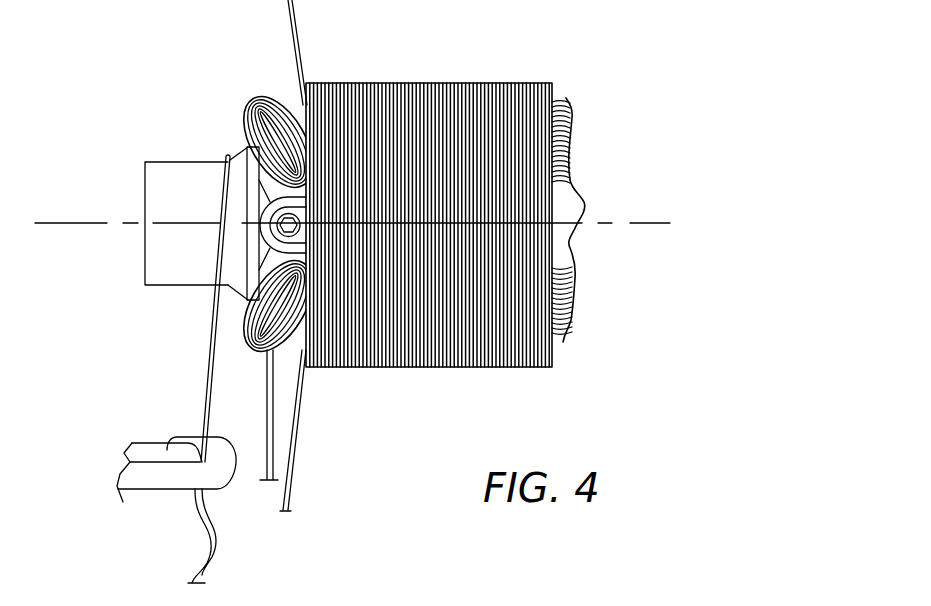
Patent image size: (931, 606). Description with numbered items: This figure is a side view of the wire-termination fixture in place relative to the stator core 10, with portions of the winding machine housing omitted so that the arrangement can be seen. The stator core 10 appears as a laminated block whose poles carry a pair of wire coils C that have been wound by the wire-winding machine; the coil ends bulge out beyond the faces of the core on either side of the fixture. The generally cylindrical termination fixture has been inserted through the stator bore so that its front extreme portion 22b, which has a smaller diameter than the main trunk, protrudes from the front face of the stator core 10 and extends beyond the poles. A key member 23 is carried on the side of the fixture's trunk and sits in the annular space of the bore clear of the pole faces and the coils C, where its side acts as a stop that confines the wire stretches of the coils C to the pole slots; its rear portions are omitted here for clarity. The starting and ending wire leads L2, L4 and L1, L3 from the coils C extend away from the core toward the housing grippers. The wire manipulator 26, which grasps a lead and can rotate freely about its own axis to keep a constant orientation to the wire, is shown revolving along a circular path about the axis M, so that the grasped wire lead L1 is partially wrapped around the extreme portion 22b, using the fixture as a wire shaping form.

The stator core 10 is at (445, 90).
The front extreme portion 22b is at (182, 175).
The key member 23 is at (265, 198).
The wire manipulator 26 is at (162, 480).
The wire coils C is at (250, 108).
The wire lead L1 is at (208, 323).
The wire lead L2 is at (300, 33).
The wire lead L3 is at (302, 392).
The wire lead L4 is at (267, 470).
The axis M is at (73, 223).